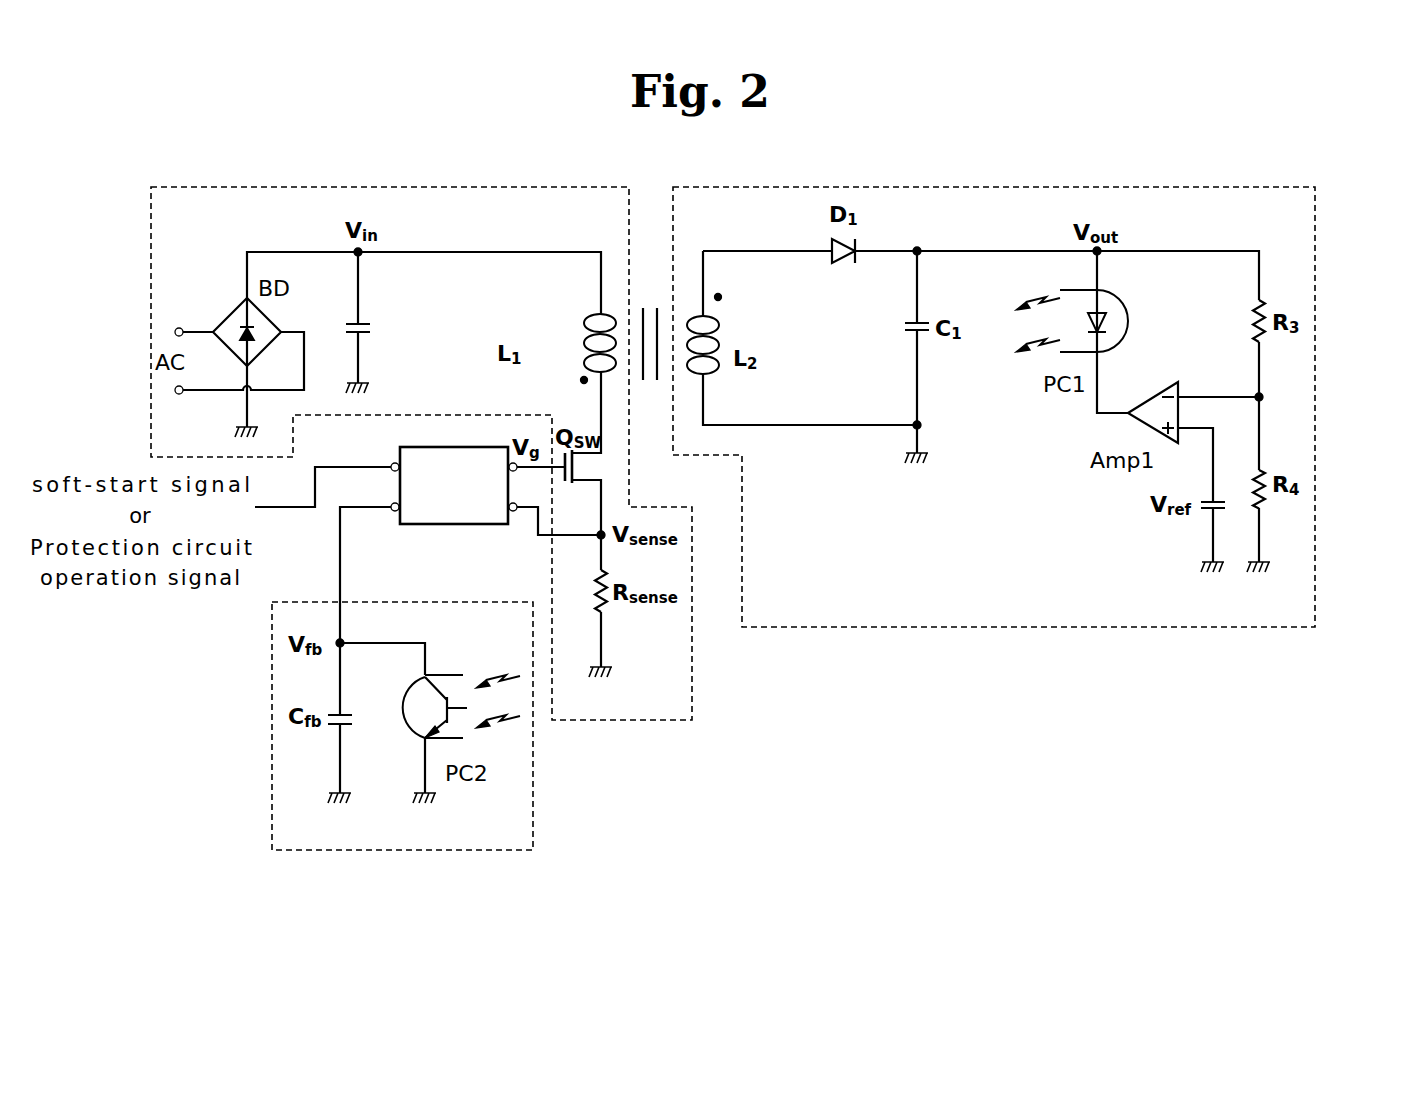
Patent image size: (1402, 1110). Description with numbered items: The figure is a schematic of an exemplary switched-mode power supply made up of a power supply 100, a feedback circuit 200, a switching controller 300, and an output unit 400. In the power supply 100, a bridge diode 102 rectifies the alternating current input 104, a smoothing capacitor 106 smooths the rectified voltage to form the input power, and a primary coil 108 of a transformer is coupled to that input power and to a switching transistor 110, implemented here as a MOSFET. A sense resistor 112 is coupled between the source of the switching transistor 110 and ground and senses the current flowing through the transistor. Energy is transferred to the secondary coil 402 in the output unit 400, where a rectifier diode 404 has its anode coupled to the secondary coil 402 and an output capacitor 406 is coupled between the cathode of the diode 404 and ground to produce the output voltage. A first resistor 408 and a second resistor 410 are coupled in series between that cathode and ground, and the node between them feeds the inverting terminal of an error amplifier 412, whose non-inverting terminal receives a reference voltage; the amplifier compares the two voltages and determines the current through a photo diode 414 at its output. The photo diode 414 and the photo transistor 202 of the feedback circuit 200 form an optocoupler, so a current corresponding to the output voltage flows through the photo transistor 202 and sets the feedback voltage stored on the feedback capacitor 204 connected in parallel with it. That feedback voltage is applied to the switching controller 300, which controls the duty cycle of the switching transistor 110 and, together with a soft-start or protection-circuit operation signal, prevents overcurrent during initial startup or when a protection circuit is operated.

The power supply 100 is at (528, 187).
The bridge diode 102 is at (237, 309).
The alternating current input 104 is at (152, 358).
The capacitor Cin 106 is at (371, 329).
The primary coil L1 108 is at (582, 345).
The switching transistor Qsw 110 is at (604, 468).
The sense resistor Rsense 112 is at (606, 606).
The feedback circuit 200 is at (480, 601).
The photo transistor PC2 202 is at (450, 674).
The capacitor Cfb 204 is at (345, 727).
The switching controller 300 is at (437, 526).
The output unit 400 is at (1062, 187).
The secondary coil L2 402 is at (722, 343).
The diode D1 404 is at (838, 265).
The capacitor C1 406 is at (904, 327).
The resistor R3 408 is at (1254, 312).
The resistor R4 410 is at (1262, 505).
The error amplifier Amp1 412 is at (1162, 394).
The photo diode PC1 414 is at (1130, 325).